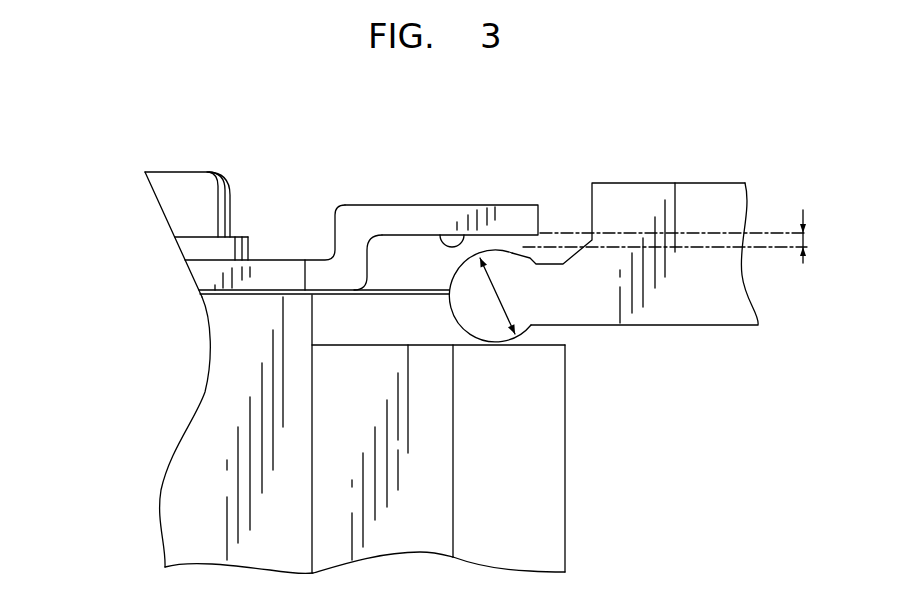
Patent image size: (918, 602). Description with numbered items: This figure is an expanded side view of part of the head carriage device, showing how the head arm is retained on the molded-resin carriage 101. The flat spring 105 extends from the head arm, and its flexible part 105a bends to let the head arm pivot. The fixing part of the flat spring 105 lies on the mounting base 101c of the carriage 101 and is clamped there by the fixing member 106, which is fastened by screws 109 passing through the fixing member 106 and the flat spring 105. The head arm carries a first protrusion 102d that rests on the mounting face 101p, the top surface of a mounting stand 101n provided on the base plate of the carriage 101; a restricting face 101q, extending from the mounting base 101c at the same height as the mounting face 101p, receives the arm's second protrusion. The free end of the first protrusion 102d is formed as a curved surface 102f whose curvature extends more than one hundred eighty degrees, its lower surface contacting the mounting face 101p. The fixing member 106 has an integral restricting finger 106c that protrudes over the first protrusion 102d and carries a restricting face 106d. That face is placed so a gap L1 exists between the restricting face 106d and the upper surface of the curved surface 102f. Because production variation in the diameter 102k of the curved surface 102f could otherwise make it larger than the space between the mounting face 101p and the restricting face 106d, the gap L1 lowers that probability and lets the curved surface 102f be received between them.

The carriage 101 is at (151, 499).
The mounting base 101c is at (214, 440).
The mounting stand 101n is at (540, 497).
The mounting face 101p is at (545, 338).
The restricting face 101q is at (343, 345).
The first protrusion 102d is at (548, 280).
The curved surface 102f is at (452, 317).
The diameter 102k is at (500, 300).
The flat spring 105 is at (231, 303).
The flexible part 105a is at (390, 290).
The fixing member 106 is at (269, 250).
The restricting finger 106c is at (518, 217).
The restricting face 106d is at (442, 231).
The screws 109 is at (186, 190).
The gap L1 is at (807, 240).